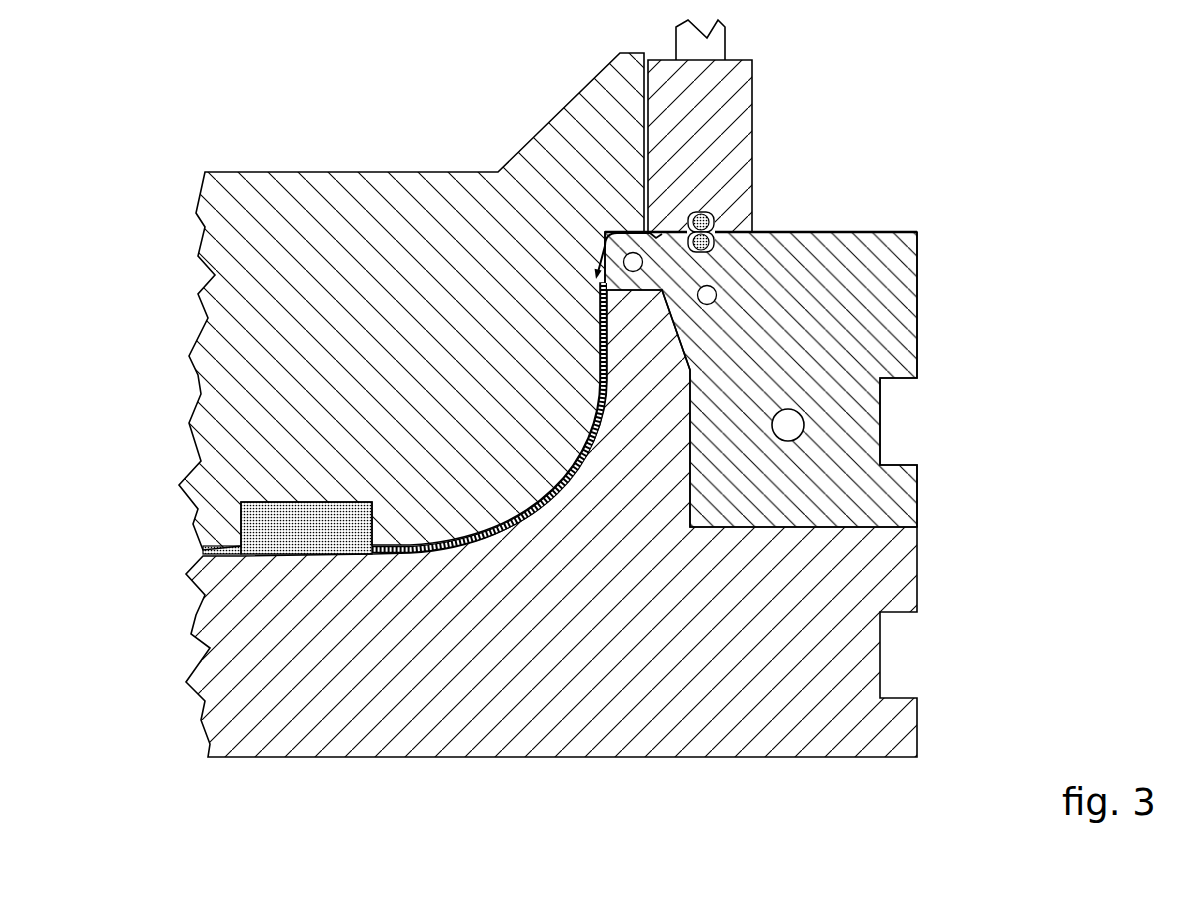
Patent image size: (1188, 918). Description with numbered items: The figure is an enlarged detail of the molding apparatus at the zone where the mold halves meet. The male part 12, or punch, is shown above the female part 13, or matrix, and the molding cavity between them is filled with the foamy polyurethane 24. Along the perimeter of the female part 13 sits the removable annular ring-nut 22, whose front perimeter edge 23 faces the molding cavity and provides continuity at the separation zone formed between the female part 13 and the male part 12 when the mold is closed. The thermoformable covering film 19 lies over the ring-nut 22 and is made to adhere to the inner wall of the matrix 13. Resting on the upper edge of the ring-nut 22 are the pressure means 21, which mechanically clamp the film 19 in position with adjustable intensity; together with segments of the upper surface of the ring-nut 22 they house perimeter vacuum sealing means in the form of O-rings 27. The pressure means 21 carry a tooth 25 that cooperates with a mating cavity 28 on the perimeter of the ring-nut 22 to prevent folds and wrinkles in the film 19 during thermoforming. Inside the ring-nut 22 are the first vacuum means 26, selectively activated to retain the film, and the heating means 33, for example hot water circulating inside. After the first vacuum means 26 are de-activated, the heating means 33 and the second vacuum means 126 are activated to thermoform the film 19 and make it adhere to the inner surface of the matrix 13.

The male part 12 is at (297, 190).
The female part 13 is at (910, 568).
The thermoformable covering film 19 is at (867, 233).
The pressure means 21 is at (744, 87).
The annular ring-nut 22 is at (908, 360).
The front perimeter edge 23 is at (600, 290).
The foamy polyurethane 24 is at (597, 343).
The tooth 25 is at (660, 233).
The first vacuum means 26 is at (712, 298).
The O-rings 27 is at (712, 243).
The mating cavity 28 is at (662, 237).
The heating means 33 is at (805, 425).
The second vacuum means 126 is at (596, 272).